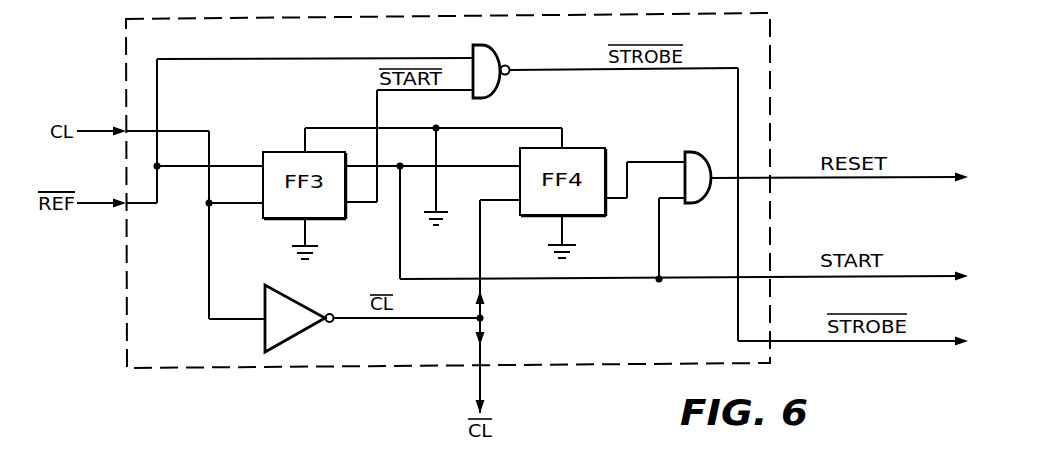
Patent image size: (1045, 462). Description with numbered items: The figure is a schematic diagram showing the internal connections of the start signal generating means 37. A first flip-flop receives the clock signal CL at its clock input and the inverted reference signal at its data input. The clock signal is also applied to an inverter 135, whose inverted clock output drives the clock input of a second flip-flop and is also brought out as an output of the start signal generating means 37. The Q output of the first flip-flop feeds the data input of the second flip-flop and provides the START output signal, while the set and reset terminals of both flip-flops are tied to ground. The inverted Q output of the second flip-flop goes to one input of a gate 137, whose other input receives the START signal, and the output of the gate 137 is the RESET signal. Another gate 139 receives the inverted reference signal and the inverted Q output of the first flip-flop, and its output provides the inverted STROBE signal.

The start signal generating means 37 is at (770, 57).
The gate 139 is at (480, 62).
The gate 137 is at (700, 170).
The inverter 135 is at (293, 327).